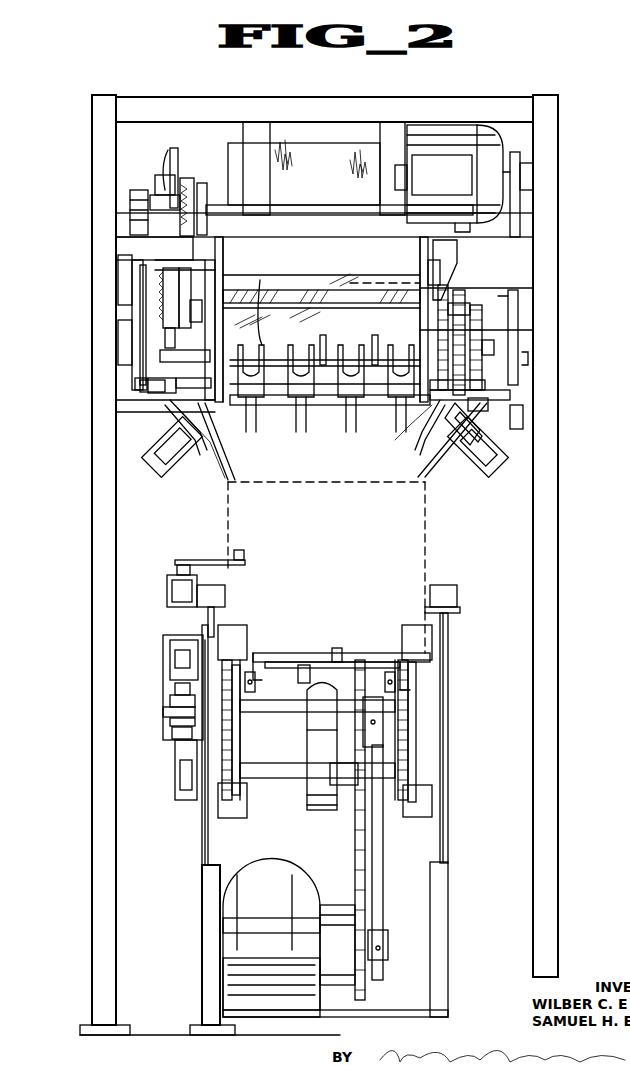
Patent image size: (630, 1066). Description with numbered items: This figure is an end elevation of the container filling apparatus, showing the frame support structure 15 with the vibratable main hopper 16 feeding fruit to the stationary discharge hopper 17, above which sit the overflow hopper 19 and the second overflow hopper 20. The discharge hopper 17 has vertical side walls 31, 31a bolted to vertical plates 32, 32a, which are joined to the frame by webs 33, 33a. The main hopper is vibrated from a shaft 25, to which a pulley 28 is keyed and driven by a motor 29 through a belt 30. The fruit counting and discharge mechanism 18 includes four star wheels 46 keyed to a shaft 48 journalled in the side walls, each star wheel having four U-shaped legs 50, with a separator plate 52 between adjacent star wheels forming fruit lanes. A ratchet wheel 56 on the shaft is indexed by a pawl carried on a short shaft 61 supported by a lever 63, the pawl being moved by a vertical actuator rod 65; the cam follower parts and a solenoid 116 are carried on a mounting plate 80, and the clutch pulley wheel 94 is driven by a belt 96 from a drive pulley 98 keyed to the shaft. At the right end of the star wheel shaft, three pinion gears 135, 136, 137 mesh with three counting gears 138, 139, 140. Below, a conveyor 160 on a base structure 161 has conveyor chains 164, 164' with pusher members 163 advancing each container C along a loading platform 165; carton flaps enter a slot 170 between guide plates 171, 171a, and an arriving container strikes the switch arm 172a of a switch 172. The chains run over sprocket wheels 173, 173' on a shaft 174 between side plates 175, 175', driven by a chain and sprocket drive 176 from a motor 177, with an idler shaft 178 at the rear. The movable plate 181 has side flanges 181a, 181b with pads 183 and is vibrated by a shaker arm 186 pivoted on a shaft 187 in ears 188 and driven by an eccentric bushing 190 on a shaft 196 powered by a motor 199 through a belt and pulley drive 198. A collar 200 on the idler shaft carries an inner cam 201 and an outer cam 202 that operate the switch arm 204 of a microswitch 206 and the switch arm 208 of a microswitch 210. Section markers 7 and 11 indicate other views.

The section line 7 is at (150, 235).
The frame 11 is at (365, 278).
The frame support structure 15 is at (560, 215).
The main hopper 16 is at (365, 345).
The discharge hopper 17 is at (333, 360).
The counting mechanism 18 is at (485, 334).
The overflow hopper 19 is at (320, 172).
The second overflow hopper 20 is at (343, 290).
The shaft 25 is at (140, 353).
The pulley 28 is at (518, 322).
The motor 29 is at (455, 172).
The belt 30 is at (520, 150).
The side wall 31 is at (205, 415).
The side wall 31a is at (430, 440).
The vertical plate 32 is at (223, 250).
The vertical plate 32a is at (420, 252).
The web 33 is at (195, 248).
The web 33a is at (452, 256).
The star wheel 46 is at (276, 405).
The rotatable shaft 48 is at (322, 400).
The leg 50 is at (298, 405).
The separator plate 52 is at (305, 300).
The ratchet wheel 56 is at (165, 395).
The short shaft 61 is at (203, 345).
The lever 63 is at (135, 380).
The actuator rod 65 is at (178, 160).
The mounting plate 80 is at (195, 195).
The pulley wheel 94 is at (132, 293).
The belt 96 is at (132, 311).
The drive pulley 98 is at (120, 330).
The solenoid 116 is at (162, 190).
The pinion gear 135 is at (450, 425).
The pinion gear 136 is at (482, 436).
The pinion gear 137 is at (488, 402).
The counting gear 138 is at (420, 285).
The counting gear 139 is at (533, 288).
The counting gear 140 is at (465, 308).
The conveyor 160 is at (245, 655).
The base structure 161 is at (203, 896).
The pusher member 163 is at (236, 635).
The conveyor chain 164 is at (251, 730).
The conveyor chain 164' is at (452, 725).
The loading platform 165 is at (337, 645).
The slot 170 is at (155, 455).
The guide plate 171 is at (203, 452).
The guide plate 171a is at (188, 450).
The switch 172 is at (172, 588).
The switch arm 172a is at (217, 560).
The sprocket wheel 173 is at (302, 730).
The sprocket wheel 173' is at (447, 730).
The shaft 174 is at (312, 735).
The side plate 175 is at (168, 736).
The side plate 175' is at (460, 724).
The chain and sprocket drive 176 is at (355, 836).
The motor 177 is at (278, 954).
The rotatable shaft 178 is at (163, 712).
The movable plate 181 is at (318, 653).
The side flange 181a is at (258, 652).
The side flange 181b is at (400, 655).
The pad 183 is at (255, 690).
The shaker arm 186 is at (308, 712).
The shaft 187 is at (298, 672).
The ear 188 is at (335, 690).
The eccentric bushing 190 is at (300, 795).
The power driven shaft 196 is at (275, 780).
The belt and pulley drive 198 is at (383, 865).
The motor 199 is at (335, 905).
The collar 200 is at (170, 708).
The inner cam 201 is at (170, 724).
The outer cam 202 is at (175, 700).
The switch arm 204 is at (175, 740).
The microswitch 206 is at (185, 795).
The switch arm 208 is at (178, 680).
The microswitch 210 is at (170, 655).
The container C is at (425, 560).